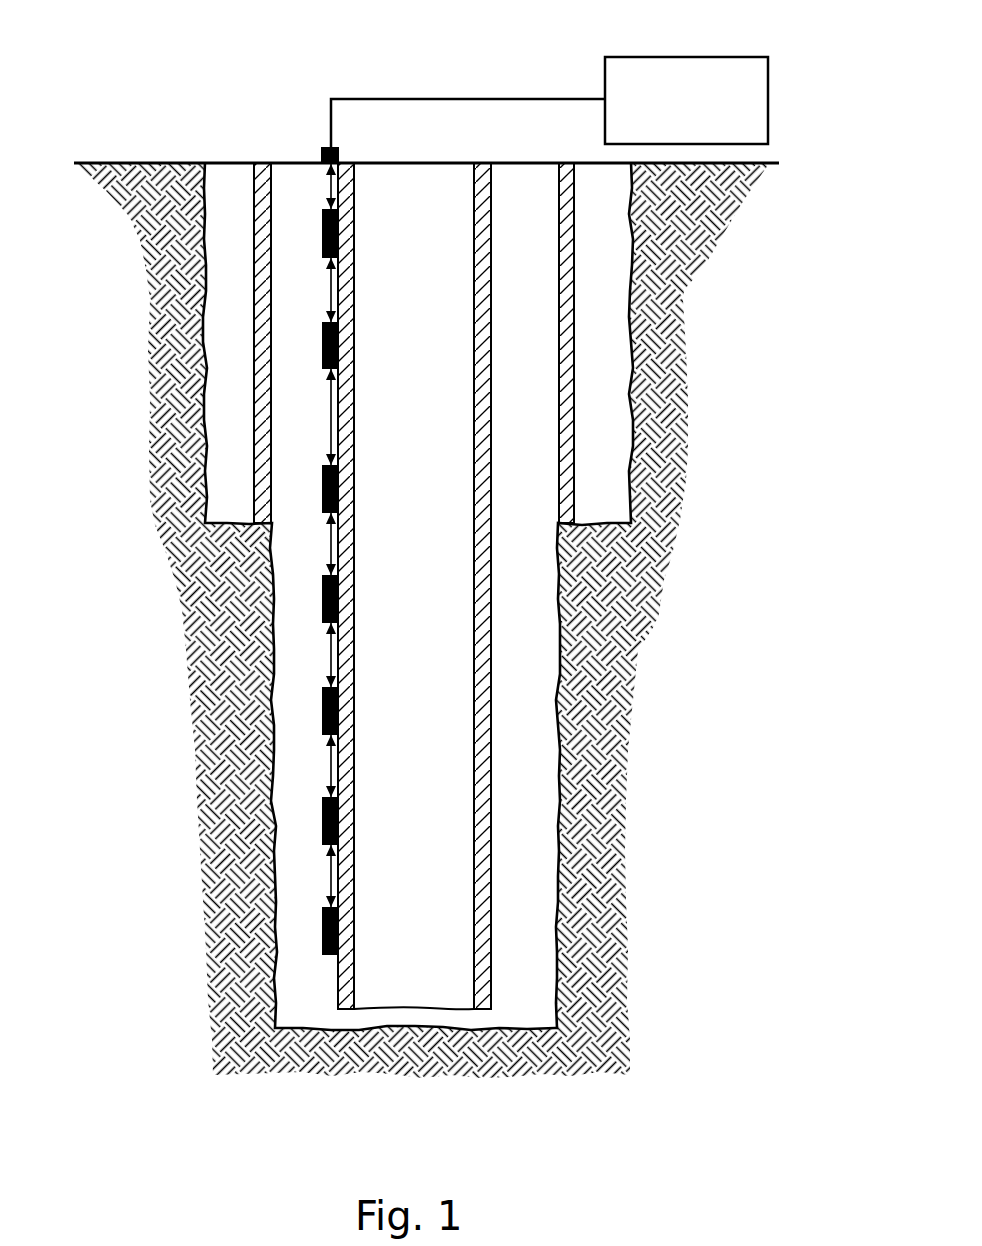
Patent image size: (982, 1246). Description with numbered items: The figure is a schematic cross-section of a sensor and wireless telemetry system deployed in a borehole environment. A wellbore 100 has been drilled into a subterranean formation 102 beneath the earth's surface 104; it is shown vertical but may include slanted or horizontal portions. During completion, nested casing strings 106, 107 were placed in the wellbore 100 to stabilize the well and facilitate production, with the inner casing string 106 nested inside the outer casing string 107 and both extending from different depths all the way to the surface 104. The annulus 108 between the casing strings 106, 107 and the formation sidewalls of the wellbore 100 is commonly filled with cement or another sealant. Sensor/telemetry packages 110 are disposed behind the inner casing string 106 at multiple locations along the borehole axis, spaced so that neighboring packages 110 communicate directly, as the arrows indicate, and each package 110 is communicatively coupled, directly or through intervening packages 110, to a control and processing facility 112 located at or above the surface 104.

The wellbore 100 is at (570, 566).
The subterranean formation 102 is at (830, 338).
The earth's surface 104 is at (159, 148).
The inner casing string 106 is at (492, 672).
The outer casing string 107 is at (574, 292).
The annulus 108 is at (293, 758).
The sensor/telemetry package 110 is at (322, 245).
The control and processing facility 112 is at (692, 57).